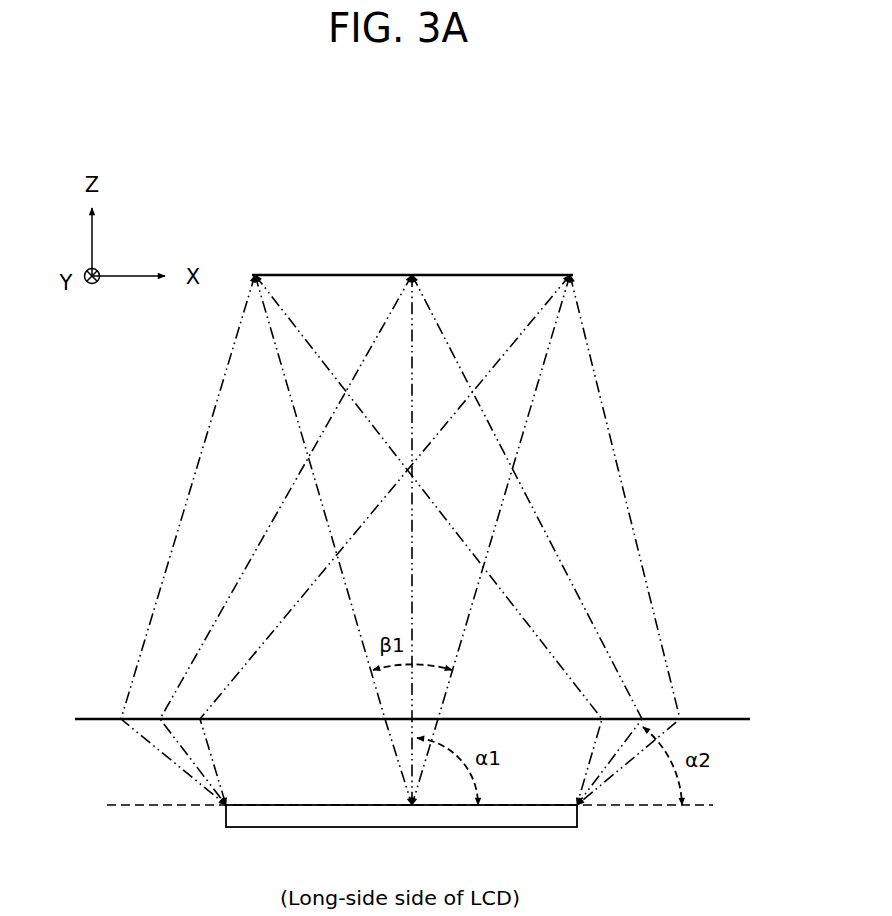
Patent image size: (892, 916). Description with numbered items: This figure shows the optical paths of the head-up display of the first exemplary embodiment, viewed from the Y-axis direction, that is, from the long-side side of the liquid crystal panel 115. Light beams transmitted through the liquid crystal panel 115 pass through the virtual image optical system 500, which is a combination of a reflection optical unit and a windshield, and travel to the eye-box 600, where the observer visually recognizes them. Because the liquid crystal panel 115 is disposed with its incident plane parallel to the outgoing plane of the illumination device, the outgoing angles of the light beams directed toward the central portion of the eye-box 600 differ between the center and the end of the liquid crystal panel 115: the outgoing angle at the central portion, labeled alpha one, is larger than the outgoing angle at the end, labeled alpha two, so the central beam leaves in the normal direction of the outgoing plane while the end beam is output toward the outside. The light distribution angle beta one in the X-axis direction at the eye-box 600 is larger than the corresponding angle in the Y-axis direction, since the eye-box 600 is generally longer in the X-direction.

The eye-box 600 is at (500, 272).
The virtual image optical system 500 is at (716, 717).
The liquid crystal panel 115 is at (242, 828).